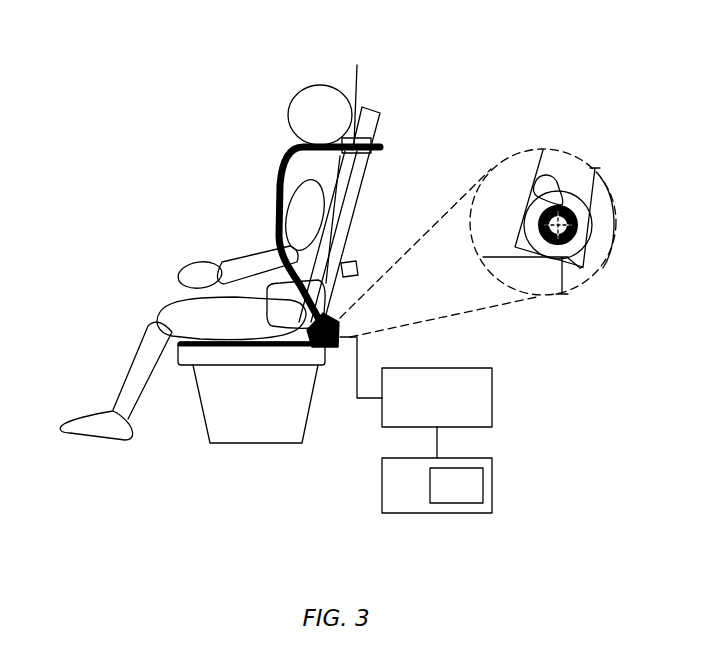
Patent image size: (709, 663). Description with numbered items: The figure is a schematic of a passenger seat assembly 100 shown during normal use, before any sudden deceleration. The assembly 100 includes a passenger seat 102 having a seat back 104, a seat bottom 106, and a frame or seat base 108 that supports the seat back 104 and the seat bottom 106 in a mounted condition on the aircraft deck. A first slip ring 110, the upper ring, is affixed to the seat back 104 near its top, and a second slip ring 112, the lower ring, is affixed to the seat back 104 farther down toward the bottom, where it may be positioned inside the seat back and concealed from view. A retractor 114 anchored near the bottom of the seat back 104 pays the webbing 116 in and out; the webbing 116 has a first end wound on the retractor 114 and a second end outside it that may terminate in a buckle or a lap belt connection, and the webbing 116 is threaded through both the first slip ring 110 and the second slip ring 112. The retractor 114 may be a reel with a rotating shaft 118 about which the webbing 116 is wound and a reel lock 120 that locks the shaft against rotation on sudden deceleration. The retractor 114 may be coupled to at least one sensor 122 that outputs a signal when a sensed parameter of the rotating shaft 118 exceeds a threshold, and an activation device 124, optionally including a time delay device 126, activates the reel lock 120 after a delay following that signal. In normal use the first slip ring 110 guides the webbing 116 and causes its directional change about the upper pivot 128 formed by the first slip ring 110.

The passenger seat assembly 100 is at (200, 84).
The passenger seat 102 is at (236, 431).
The seat back 104 is at (382, 127).
The seat bottom 106 is at (176, 363).
The seat base 108 is at (197, 450).
The first slip ring 110 is at (336, 179).
The second slip ring 112 is at (353, 262).
The retractor 114 is at (614, 213).
The webbing 116 is at (276, 176).
The rotating shaft 118 is at (598, 256).
The reel lock 120 is at (543, 178).
The sensor 122 is at (424, 410).
The activation device 124 is at (391, 500).
The time delay device 126 is at (443, 497).
The upper pivot 128 is at (381, 148).